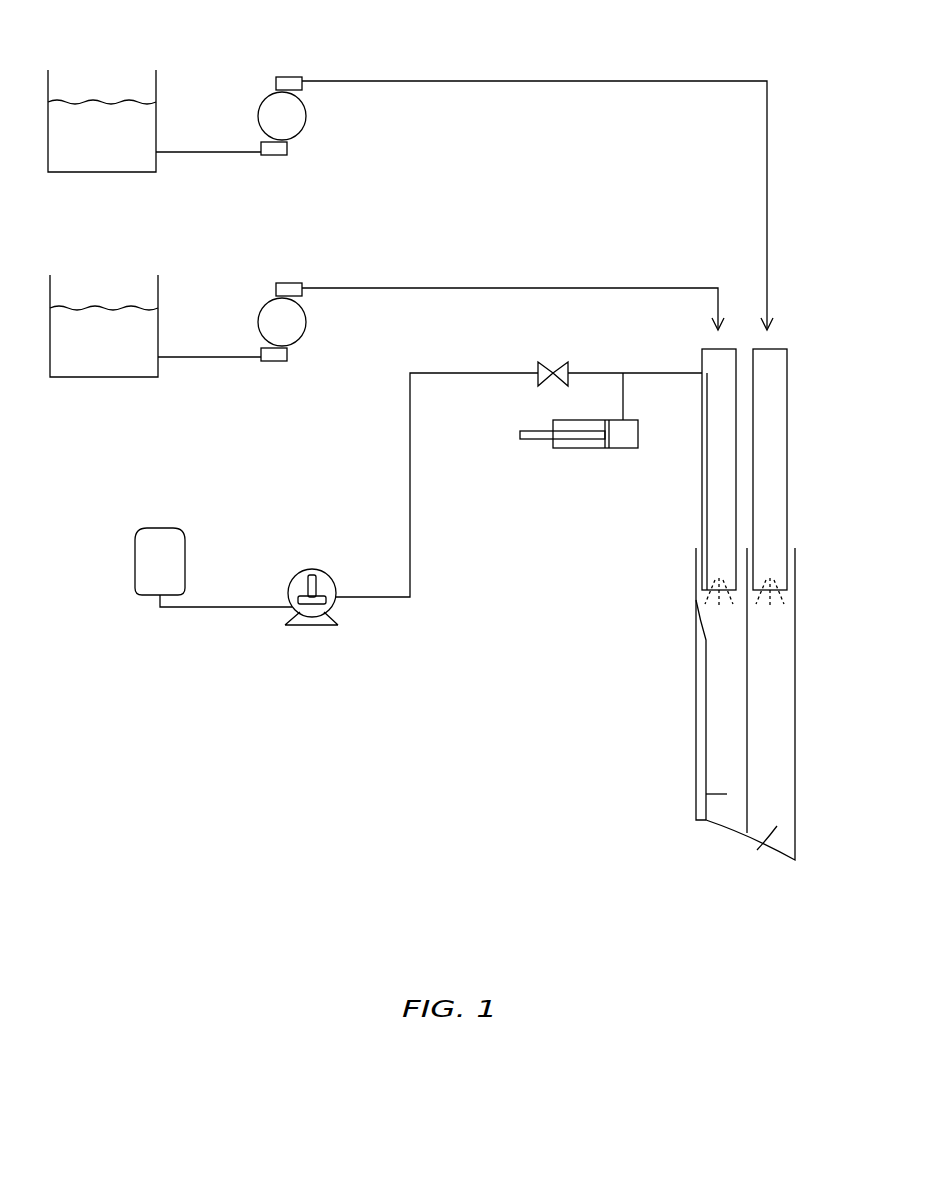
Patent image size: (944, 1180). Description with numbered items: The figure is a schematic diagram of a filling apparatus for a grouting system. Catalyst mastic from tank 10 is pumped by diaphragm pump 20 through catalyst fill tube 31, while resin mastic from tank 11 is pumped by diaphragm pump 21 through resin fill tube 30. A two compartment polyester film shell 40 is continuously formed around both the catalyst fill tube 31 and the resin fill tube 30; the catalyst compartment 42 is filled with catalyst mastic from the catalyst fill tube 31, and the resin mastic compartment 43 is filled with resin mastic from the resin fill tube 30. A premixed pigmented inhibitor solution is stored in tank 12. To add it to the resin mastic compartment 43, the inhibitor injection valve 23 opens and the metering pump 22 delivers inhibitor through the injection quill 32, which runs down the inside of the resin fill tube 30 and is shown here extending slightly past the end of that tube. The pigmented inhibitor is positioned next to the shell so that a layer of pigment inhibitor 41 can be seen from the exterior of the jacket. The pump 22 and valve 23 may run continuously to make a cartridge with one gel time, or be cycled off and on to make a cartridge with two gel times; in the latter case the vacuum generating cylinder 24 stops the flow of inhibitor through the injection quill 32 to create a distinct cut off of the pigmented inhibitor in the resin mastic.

The tank 10 is at (156, 70).
The tank 11 is at (158, 275).
The tank 12 is at (185, 540).
The diaphragm pump 20 is at (302, 77).
The diaphragm pump 21 is at (302, 283).
The metering pump 22 is at (303, 627).
The inhibitor injection valve 23 is at (560, 365).
The vacuum generating cylinder 24 is at (625, 448).
The resin fill tube 30 is at (702, 349).
The catalyst fill tube 31 is at (762, 348).
The injection quill 32 is at (705, 496).
The two compartment polyester film shell 40 is at (796, 592).
The layer of pigment inhibitor 41 is at (700, 692).
The catalyst compartment 42 is at (760, 855).
The resin mastic compartment 43 is at (727, 794).